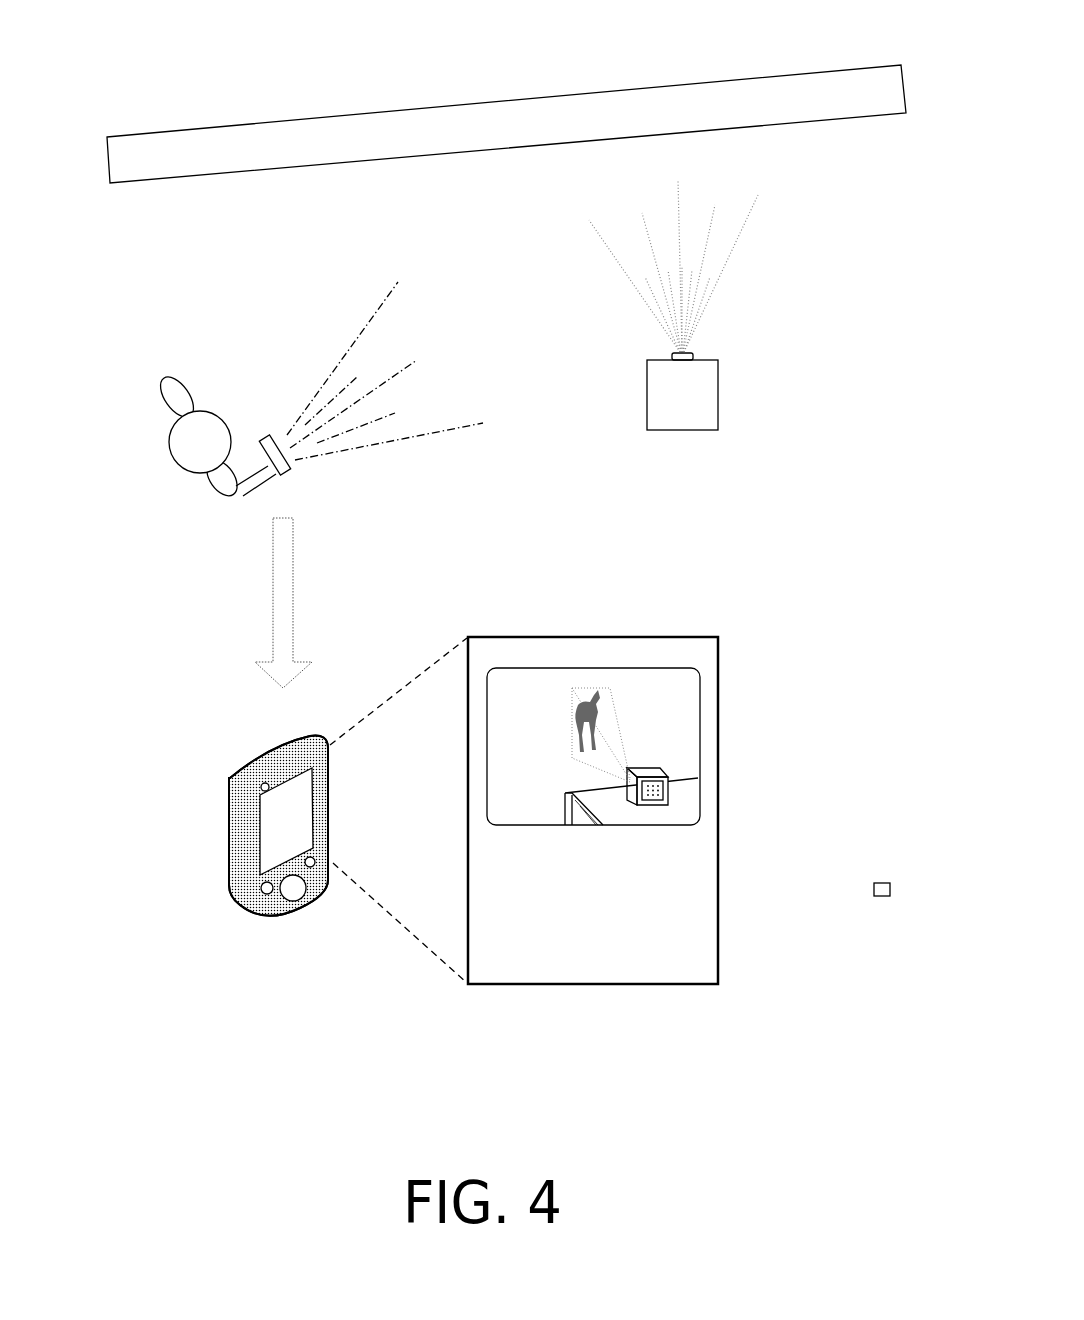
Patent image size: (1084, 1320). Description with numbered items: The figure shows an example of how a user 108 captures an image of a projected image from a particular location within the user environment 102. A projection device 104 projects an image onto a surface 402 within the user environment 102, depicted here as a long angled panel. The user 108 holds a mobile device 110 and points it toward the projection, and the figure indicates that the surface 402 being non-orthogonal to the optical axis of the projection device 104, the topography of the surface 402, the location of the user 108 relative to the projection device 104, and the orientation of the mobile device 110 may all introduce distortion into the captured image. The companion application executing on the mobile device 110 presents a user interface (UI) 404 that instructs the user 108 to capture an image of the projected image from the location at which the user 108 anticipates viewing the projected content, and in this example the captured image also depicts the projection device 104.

The user environment 102 is at (247, 60).
The surface 402 is at (428, 157).
The user 108 is at (177, 363).
The mobile device 110 is at (293, 475).
The projection device 104 is at (682, 437).
The user interface (UI) 404 is at (695, 637).